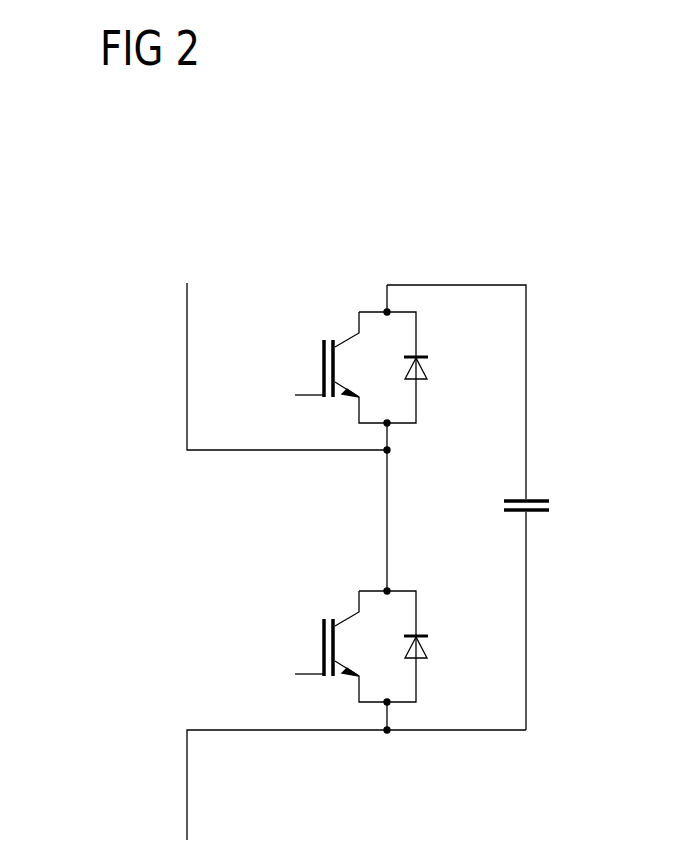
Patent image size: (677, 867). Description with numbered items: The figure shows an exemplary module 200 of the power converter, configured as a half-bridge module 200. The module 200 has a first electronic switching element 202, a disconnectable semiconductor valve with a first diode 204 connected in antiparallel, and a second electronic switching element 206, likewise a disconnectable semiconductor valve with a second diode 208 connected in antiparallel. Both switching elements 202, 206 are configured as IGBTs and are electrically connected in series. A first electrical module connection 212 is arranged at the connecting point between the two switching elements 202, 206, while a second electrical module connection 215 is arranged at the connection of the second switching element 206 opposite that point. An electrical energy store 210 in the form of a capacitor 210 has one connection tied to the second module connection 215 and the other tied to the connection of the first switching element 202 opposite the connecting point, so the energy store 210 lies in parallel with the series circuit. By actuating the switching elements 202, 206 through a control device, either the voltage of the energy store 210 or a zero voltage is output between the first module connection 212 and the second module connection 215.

The module 200 is at (462, 202).
The first electronic switching element 202 is at (323, 363).
The first diode 204 is at (428, 368).
The second electronic switching element 206 is at (323, 642).
The second diode 208 is at (428, 647).
The energy store 210 is at (552, 506).
The first electrical module connection 212 is at (187, 331).
The second electrical module connection 215 is at (187, 786).